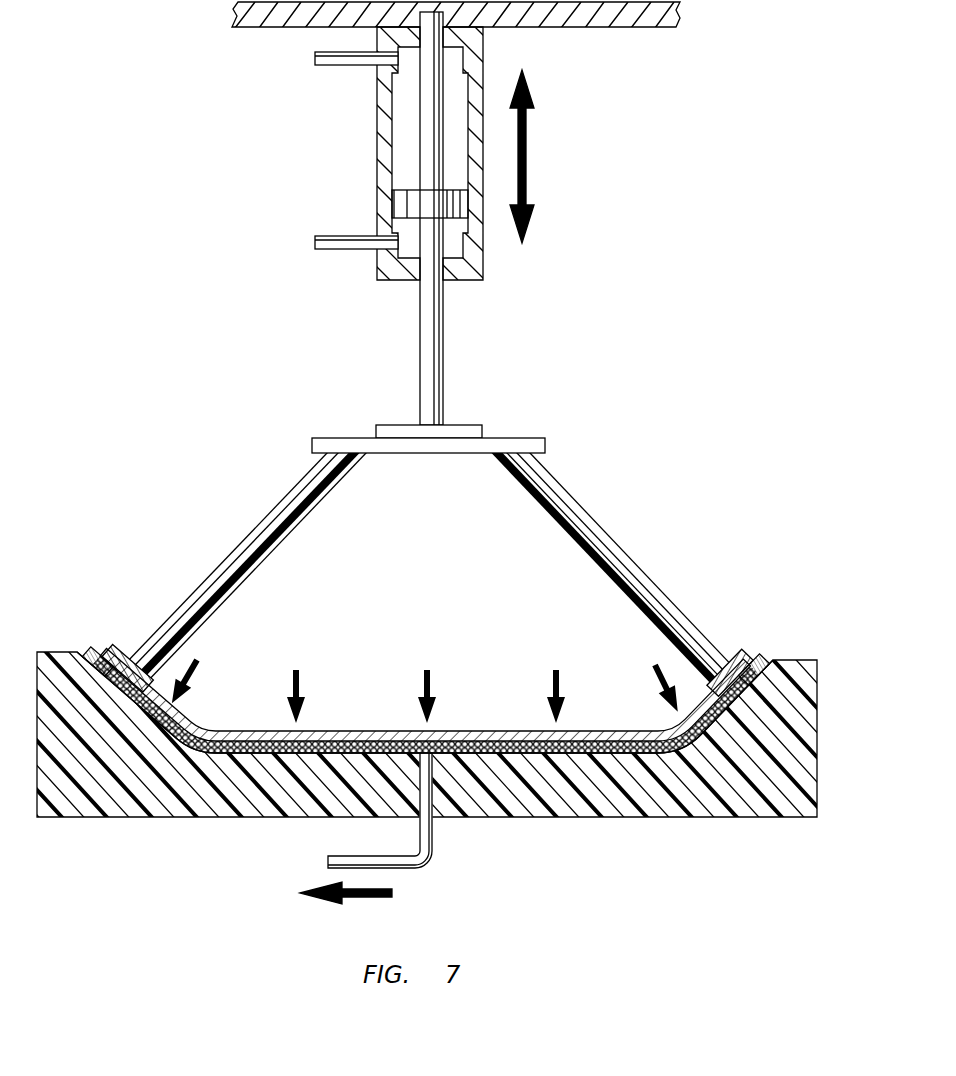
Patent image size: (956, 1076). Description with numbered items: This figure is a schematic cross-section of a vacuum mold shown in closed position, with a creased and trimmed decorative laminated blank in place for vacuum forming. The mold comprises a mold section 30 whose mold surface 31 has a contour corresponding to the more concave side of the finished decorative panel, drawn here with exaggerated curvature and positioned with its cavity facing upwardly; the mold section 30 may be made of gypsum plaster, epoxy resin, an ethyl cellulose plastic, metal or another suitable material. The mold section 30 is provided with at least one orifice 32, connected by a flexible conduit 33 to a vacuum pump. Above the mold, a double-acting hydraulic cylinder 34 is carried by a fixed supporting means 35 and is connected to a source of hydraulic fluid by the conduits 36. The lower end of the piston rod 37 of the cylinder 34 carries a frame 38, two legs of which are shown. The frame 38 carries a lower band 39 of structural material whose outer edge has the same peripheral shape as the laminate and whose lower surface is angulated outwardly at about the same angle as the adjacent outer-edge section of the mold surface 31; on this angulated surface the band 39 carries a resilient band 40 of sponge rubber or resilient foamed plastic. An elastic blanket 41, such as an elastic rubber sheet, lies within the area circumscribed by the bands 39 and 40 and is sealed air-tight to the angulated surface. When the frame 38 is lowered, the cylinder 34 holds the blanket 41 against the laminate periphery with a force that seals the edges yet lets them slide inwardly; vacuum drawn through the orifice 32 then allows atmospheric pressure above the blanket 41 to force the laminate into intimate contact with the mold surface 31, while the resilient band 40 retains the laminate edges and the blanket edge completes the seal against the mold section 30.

The mold section 30 is at (672, 804).
The mold surface 31 is at (676, 744).
The orifice 32 is at (418, 744).
The flexible conduit 33 is at (360, 856).
The double-acting hydraulic cylinder 34 is at (377, 171).
The supporting means 35 is at (587, 28).
The conduits 36 is at (315, 58).
The piston rod 37 is at (443, 332).
The frame 38 is at (637, 561).
The lower band 39 is at (134, 612).
The resilient band 40 is at (108, 653).
The elastic blanket 41 is at (581, 732).